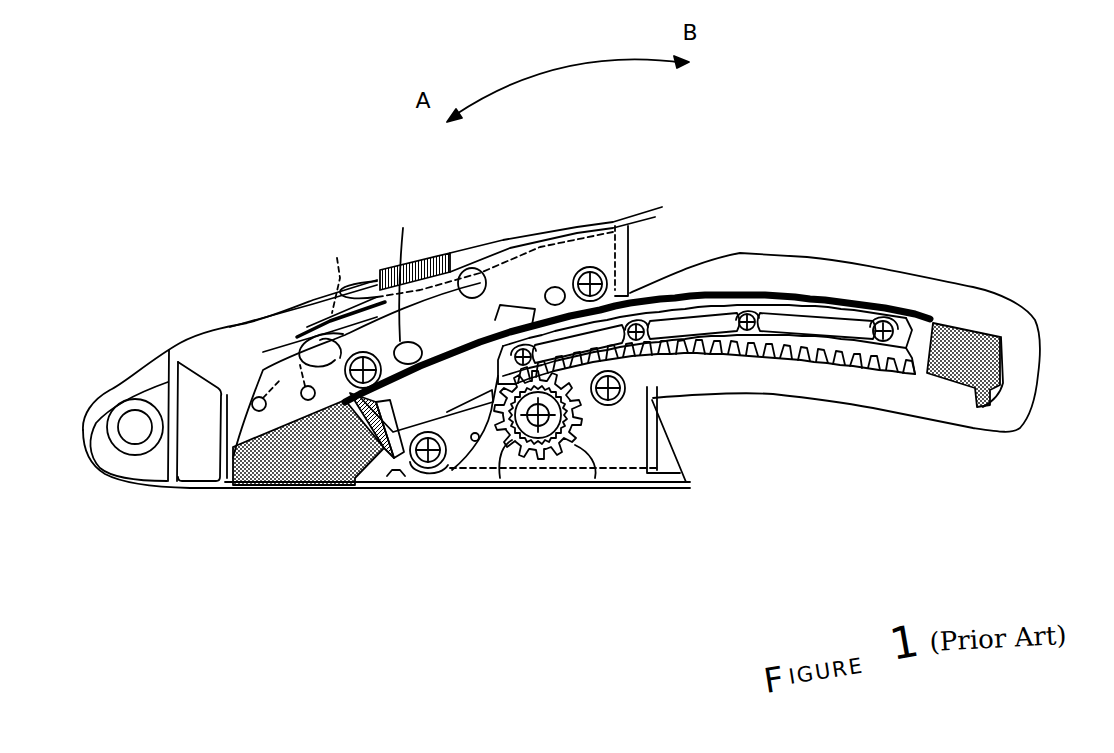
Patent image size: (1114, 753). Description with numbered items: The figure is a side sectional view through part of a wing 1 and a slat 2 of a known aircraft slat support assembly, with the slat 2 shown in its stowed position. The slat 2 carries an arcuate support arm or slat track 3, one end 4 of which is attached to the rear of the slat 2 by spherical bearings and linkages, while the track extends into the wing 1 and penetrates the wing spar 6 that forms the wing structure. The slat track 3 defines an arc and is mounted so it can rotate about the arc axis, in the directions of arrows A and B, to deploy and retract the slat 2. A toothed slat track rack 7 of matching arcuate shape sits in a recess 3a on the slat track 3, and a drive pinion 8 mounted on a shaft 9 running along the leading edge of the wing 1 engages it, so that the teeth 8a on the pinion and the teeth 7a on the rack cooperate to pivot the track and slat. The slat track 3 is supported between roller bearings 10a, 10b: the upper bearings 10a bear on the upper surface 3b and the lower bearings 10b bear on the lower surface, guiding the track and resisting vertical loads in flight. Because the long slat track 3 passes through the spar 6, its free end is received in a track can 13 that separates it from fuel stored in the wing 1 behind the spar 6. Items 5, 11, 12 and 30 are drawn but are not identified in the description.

The wing 1 is at (610, 215).
The slat 2 is at (177, 347).
The slat track 3 is at (750, 293).
The recess 3a is at (917, 367).
The upper surface 3b is at (875, 302).
The end 4 is at (297, 462).
The cam 5 is at (455, 282).
The wing spar 6 is at (588, 268).
The slat track rack 7 is at (803, 350).
The teeth 7a is at (725, 352).
The drive pinion 8 is at (537, 440).
The teeth 8a is at (570, 440).
The shaft 9 is at (520, 440).
The upper roller bearings 10a is at (357, 354).
The lower roller bearings 10b is at (417, 483).
The sliding plate 11 is at (490, 337).
The guide rod 12 is at (390, 365).
The track can 13 is at (973, 285).
The buffer element 30 is at (947, 385).